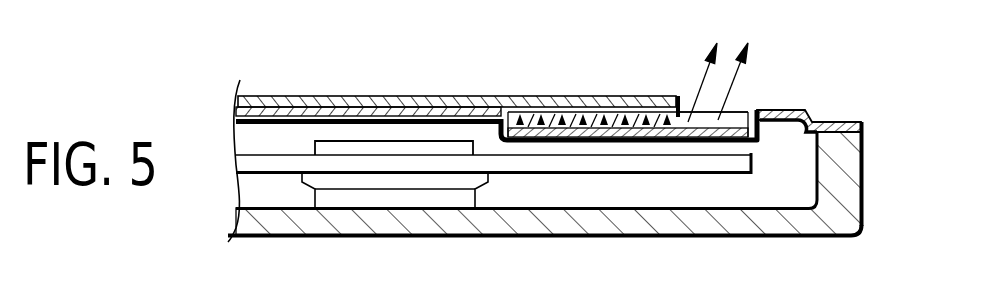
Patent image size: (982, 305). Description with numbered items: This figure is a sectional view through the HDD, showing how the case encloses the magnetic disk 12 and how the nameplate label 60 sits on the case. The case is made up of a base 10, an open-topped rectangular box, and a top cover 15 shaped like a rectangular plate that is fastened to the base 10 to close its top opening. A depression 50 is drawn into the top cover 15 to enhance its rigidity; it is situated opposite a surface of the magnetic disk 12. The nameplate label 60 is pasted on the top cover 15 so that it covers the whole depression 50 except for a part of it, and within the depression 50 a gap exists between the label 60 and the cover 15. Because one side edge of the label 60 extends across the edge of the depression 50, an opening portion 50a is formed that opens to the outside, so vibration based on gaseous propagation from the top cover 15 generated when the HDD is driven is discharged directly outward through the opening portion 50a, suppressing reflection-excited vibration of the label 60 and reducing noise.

The base 10 is at (792, 222).
The magnetic disk 12 is at (525, 172).
The top cover 15 is at (833, 117).
The depression 50 is at (702, 142).
The opening portion 50a is at (738, 112).
The nameplate label 60 is at (356, 96).